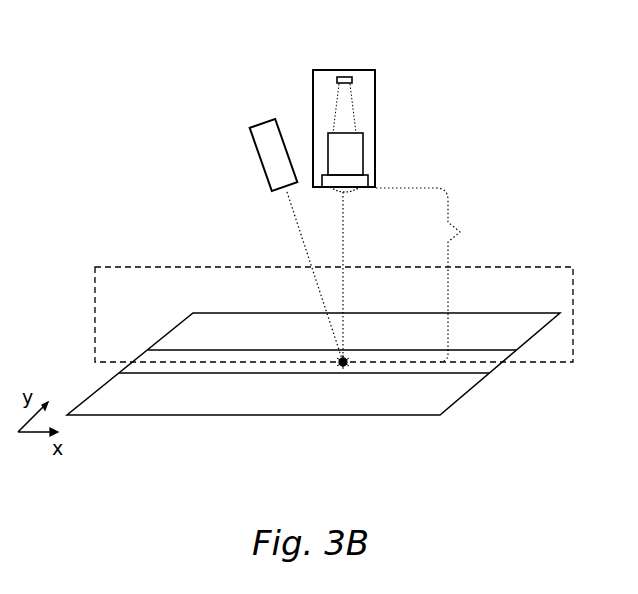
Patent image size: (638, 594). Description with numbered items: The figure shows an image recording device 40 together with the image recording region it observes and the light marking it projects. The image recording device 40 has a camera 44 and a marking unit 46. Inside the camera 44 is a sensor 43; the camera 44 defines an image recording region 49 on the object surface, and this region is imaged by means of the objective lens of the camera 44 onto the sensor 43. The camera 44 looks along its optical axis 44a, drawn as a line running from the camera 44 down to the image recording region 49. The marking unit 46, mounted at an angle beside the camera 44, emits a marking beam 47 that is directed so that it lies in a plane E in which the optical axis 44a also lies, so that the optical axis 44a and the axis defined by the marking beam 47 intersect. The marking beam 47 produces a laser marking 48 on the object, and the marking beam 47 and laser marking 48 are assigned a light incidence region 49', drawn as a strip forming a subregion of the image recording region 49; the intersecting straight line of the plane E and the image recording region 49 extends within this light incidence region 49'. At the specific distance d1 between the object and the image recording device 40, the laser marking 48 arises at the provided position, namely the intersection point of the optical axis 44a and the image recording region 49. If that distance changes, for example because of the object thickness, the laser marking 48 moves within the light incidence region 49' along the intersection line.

The image recording device 40 is at (228, 29).
The sensor 43 is at (345, 77).
The camera 44 is at (380, 114).
The optical axis 44a is at (343, 242).
The marking unit 46 is at (264, 137).
The marking beam 47 is at (296, 218).
The laser marking 48 is at (340, 364).
The image recording region 49 is at (313, 377).
The light incidence region 49' is at (353, 381).
The plane E is at (105, 302).
The distance d1 is at (438, 275).